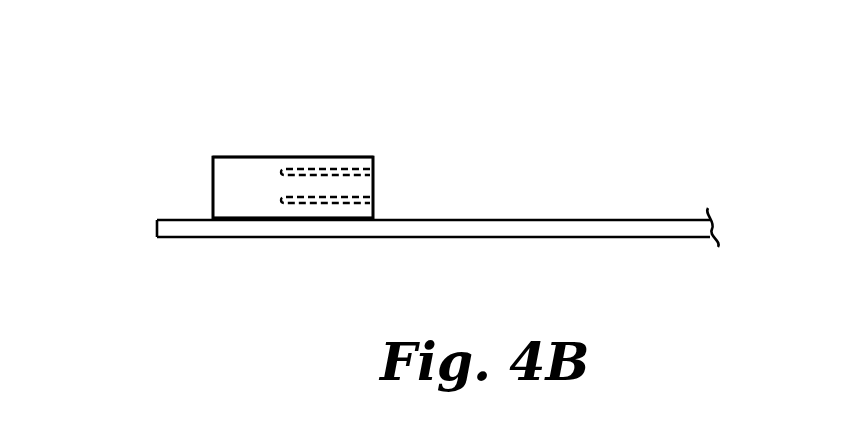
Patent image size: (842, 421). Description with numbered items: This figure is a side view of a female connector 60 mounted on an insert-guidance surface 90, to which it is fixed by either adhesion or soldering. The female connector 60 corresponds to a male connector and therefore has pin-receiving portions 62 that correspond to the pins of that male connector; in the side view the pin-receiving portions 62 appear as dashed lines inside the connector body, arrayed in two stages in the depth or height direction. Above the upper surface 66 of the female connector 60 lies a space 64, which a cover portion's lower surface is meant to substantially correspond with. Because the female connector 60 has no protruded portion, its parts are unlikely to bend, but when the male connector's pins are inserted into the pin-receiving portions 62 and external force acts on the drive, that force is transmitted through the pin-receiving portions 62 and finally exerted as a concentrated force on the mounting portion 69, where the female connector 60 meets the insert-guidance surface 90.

The female connector 60 is at (170, 175).
The pin-receiving portions 62 is at (374, 170).
The space 64 is at (311, 87).
The upper surface 66 is at (333, 157).
The mounting portion 69 is at (288, 220).
The insert-guidance surface 90 is at (590, 220).